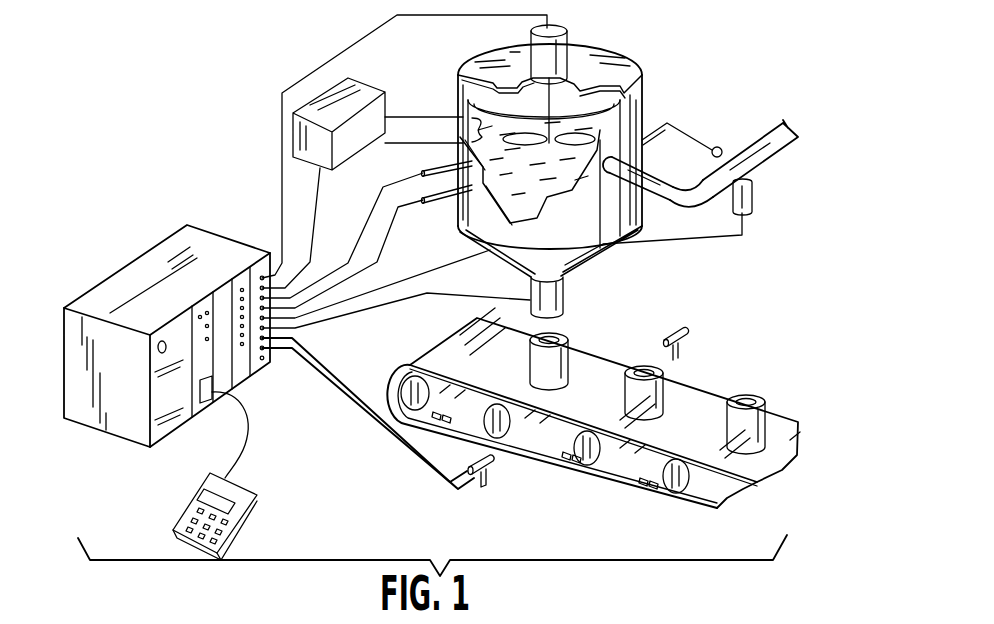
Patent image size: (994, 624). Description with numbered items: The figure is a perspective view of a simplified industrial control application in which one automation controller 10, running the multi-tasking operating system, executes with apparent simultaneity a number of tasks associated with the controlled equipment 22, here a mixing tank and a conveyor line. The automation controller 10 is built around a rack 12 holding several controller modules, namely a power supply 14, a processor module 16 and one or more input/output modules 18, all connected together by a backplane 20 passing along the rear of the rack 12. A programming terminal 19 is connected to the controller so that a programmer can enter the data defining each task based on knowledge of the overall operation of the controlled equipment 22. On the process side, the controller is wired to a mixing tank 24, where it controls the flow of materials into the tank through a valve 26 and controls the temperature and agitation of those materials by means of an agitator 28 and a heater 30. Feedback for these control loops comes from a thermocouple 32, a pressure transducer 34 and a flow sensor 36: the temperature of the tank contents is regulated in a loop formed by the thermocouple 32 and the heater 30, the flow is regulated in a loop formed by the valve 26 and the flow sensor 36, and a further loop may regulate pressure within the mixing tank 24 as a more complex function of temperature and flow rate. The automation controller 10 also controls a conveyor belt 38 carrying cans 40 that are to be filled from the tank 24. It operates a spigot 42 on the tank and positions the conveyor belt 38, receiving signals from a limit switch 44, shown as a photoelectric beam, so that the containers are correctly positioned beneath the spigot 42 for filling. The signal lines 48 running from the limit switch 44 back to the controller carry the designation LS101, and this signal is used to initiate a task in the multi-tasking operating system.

The automation controller 10 is at (154, 233).
The rack 12 is at (133, 265).
The power supply 14 is at (170, 423).
The processor module 16 is at (207, 397).
The input/output module 18 is at (256, 378).
The programming terminal 19 is at (185, 508).
The backplane 20 is at (51, 381).
The controlled equipment 22 is at (748, 68).
The mixing tank 24 is at (642, 110).
The valve 26 is at (753, 197).
The agitator 28 is at (560, 67).
The heater 30 is at (427, 115).
The thermocouple 32 is at (433, 168).
The pressure transducer 34 is at (440, 197).
The flow sensor 36 is at (717, 146).
The conveyor belt 38 is at (788, 416).
The cans 40 is at (670, 385).
The spigot 42 is at (566, 303).
The limit switch 44 is at (688, 333).
The signal lines 48 is at (404, 313).
The limit switch signal designation LS101 is at (457, 482).